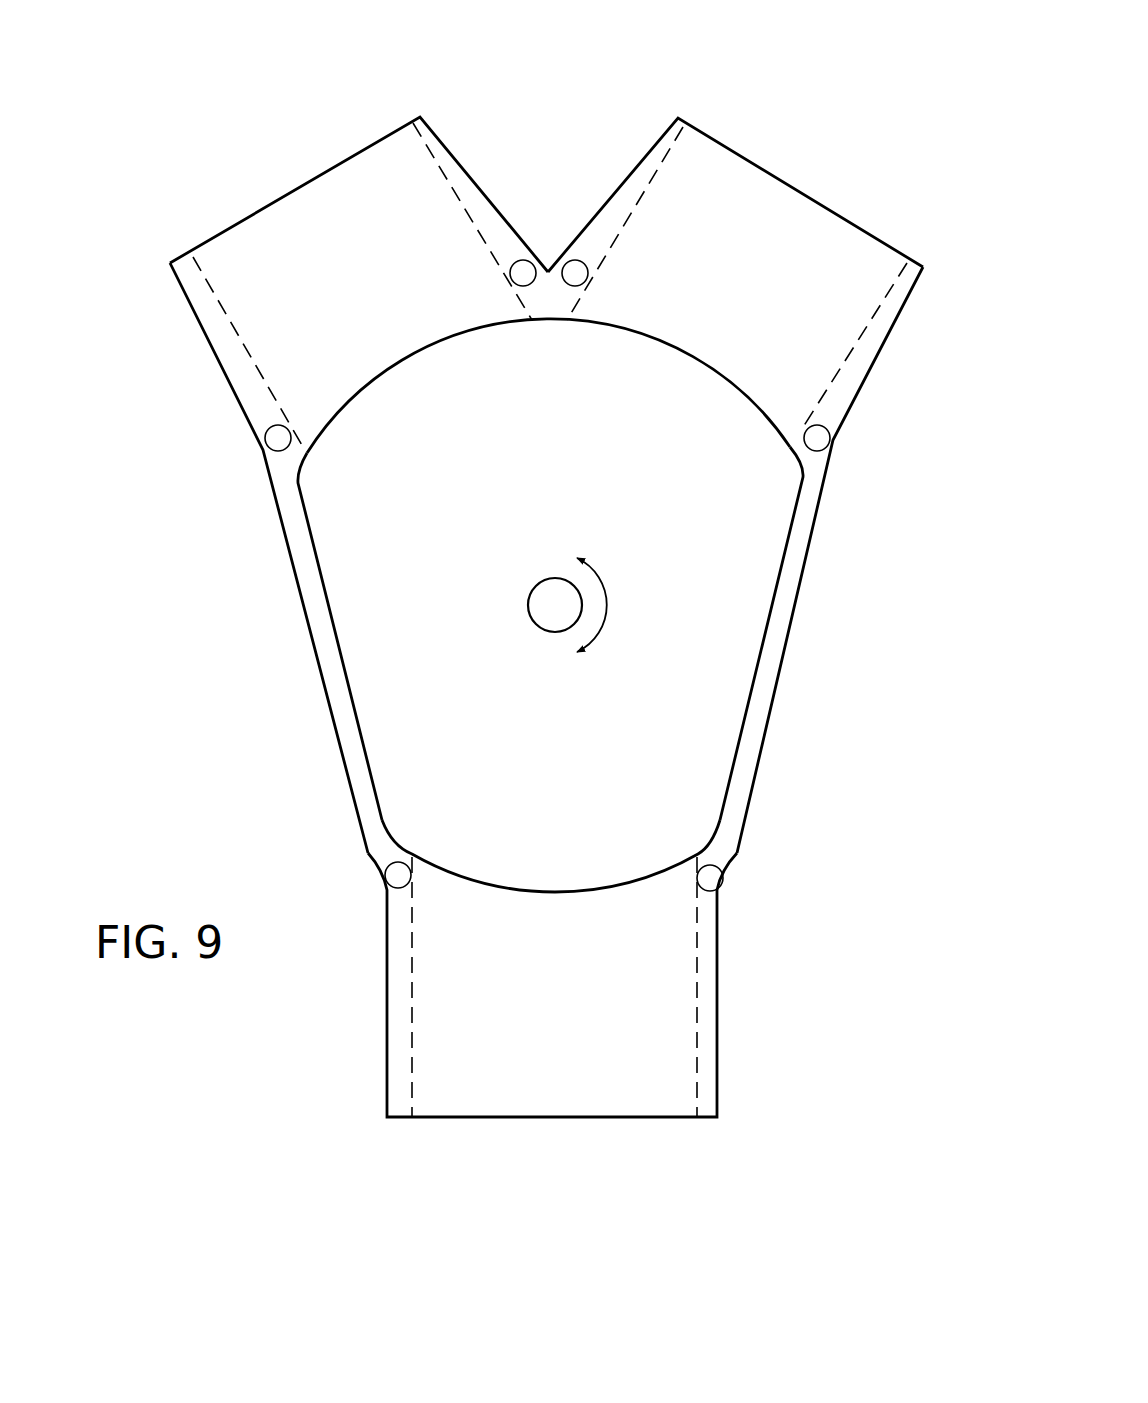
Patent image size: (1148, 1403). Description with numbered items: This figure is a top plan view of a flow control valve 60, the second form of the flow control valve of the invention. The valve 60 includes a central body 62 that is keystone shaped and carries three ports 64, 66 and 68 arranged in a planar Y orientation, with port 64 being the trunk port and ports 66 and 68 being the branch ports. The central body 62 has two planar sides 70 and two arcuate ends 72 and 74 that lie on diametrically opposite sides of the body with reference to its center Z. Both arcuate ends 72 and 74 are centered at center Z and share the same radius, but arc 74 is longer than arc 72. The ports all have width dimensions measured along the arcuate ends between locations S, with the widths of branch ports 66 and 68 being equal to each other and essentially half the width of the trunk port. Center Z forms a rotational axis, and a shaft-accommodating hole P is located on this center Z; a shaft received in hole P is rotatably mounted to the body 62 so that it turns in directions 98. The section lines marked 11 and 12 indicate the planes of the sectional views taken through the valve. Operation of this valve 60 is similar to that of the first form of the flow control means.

The section line 11- 11 is at (828, 1100).
The section line 12- 12 is at (918, 120).
The flow control valve 60 is at (546, 609).
The central body 62 is at (284, 546).
The trunk port 64 is at (383, 1033).
The branch port 66 is at (456, 152).
The branch port 68 is at (648, 150).
The planar sides 70 is at (345, 773).
The arcuate end 72 is at (494, 884).
The arcuate end 74 is at (553, 322).
The directions of rotation 98 is at (608, 613).
The shaft-accommodating hole P is at (582, 590).
The center Z is at (555, 605).
The locations S is at (704, 866).